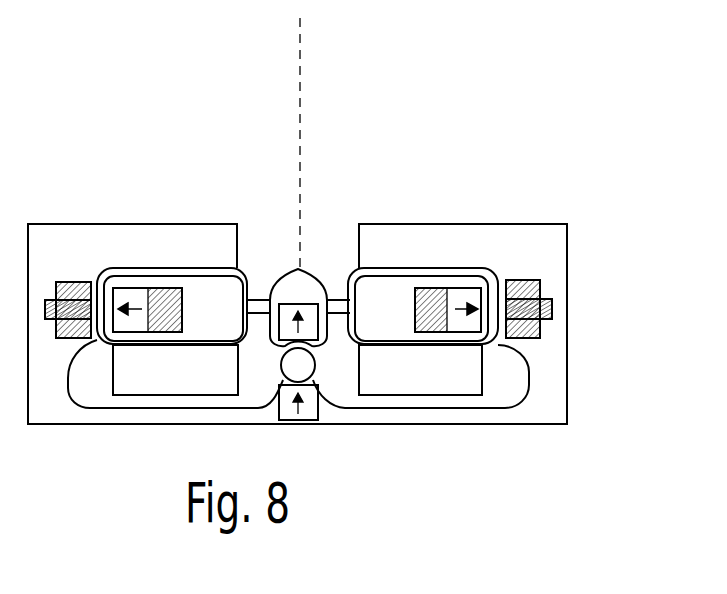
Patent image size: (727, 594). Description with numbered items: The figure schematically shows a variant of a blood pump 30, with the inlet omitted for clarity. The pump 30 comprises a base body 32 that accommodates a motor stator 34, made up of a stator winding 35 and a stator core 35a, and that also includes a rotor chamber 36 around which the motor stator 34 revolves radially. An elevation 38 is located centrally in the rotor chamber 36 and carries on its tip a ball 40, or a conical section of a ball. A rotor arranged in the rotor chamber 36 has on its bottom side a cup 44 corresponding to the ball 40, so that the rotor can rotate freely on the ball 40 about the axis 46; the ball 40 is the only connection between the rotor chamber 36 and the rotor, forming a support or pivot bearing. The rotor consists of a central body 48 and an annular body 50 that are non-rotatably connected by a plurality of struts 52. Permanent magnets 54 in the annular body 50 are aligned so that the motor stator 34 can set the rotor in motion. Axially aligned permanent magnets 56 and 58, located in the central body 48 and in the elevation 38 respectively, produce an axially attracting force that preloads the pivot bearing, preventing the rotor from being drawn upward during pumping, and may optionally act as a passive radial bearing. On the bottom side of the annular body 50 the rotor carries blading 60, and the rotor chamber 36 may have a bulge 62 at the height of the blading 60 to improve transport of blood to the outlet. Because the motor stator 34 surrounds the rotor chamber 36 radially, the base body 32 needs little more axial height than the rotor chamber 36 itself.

The pump 30 is at (137, 185).
The base body 32 is at (173, 224).
The motor stator 34 is at (73, 265).
The stator winding 35 is at (530, 300).
The stator core 35a is at (552, 318).
The rotor chamber 36 is at (336, 292).
The elevation 38 is at (326, 408).
The ball 40 is at (315, 365).
The cup 44 is at (314, 350).
The axis 46 is at (304, 42).
The central body 48 is at (290, 290).
The annular body 50 is at (383, 297).
The struts 52 is at (255, 300).
The permanent magnets 54 is at (467, 297).
The permanent magnet 56 is at (282, 398).
The permanent magnet 58 is at (275, 346).
The blading 60 is at (165, 372).
The bulge 62 is at (85, 382).